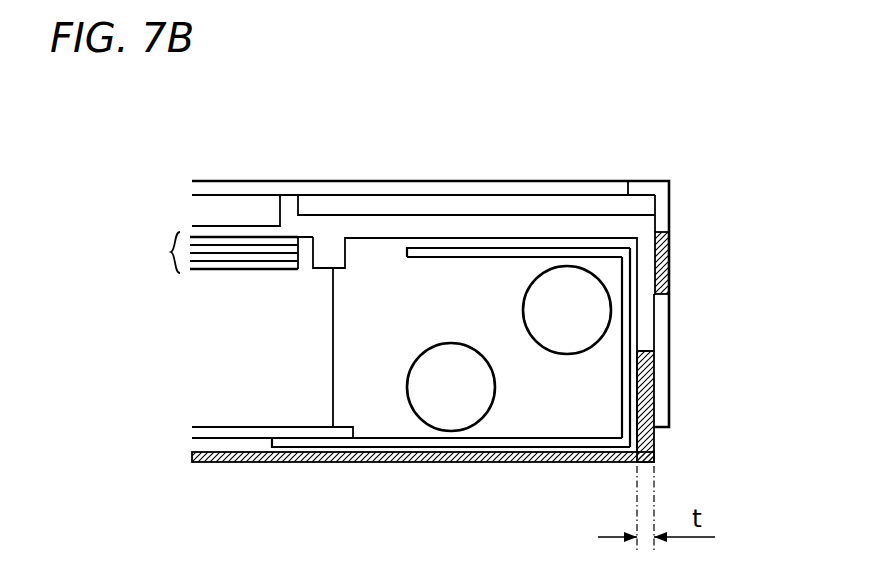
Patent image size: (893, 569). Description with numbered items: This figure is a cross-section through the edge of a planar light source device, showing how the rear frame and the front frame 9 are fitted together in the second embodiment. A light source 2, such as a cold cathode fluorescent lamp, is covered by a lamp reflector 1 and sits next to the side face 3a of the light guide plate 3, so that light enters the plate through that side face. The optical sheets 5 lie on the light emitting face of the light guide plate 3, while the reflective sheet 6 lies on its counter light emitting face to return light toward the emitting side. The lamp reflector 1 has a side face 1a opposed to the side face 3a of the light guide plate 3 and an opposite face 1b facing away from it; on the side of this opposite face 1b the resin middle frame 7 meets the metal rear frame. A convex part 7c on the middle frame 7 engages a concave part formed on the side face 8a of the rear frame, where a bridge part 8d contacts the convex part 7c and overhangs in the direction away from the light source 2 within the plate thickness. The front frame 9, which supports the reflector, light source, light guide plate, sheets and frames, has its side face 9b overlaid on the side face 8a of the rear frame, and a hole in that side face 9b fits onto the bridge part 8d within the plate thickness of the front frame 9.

The front frame 9 is at (270, 186).
The middle frame 7 is at (213, 229).
The optical sheets 5 is at (232, 252).
The light guide plate 3 is at (195, 334).
The side face of light guide plate 3a is at (338, 300).
The reflective sheet 6 is at (203, 428).
The light source 2 is at (428, 402).
The lamp reflector 1 is at (463, 449).
The side face of lamp reflector 1a is at (622, 371).
The opposite face of lamp reflector 1b is at (640, 256).
The bridge part 8d is at (670, 263).
The convex part 7c is at (647, 308).
The side face of front frame 9b is at (662, 373).
The side face of rear frame 8a is at (655, 446).